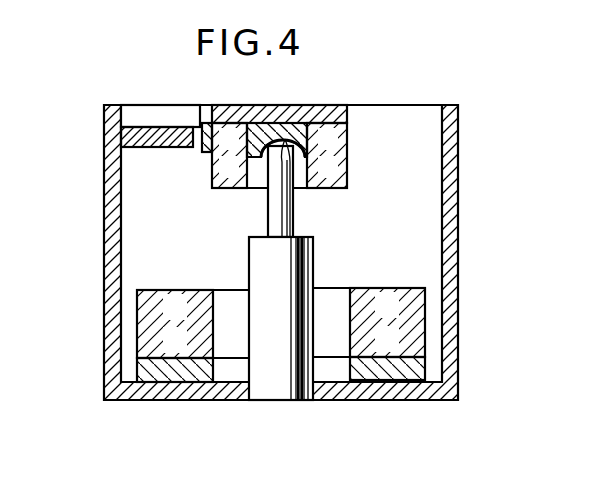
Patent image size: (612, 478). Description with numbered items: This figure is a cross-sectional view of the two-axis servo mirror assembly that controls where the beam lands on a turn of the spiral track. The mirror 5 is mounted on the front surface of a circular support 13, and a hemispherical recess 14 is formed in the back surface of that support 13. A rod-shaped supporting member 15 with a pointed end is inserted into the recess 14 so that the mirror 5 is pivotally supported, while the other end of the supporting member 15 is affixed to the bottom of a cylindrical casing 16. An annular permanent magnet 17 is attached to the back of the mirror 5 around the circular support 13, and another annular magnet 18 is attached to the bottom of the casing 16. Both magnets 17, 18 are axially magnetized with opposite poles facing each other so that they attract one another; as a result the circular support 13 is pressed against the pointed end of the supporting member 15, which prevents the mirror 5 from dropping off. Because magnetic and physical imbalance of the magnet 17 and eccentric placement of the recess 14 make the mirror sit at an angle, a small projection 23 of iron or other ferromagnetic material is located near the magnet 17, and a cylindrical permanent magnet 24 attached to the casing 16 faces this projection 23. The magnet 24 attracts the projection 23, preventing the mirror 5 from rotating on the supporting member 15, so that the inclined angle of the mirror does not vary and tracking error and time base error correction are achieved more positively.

The two-axis servo mirror 5 is at (270, 111).
The circular support 13 is at (290, 132).
The hemispherical recess 14 is at (291, 192).
The supporting member 15 is at (274, 206).
The cylindrical casing 16 is at (453, 213).
The annular permanent magnet 17 is at (232, 132).
The annular magnet 18 is at (148, 327).
The small projection 23 is at (204, 124).
The cylindrical permanent magnet 24 is at (143, 138).